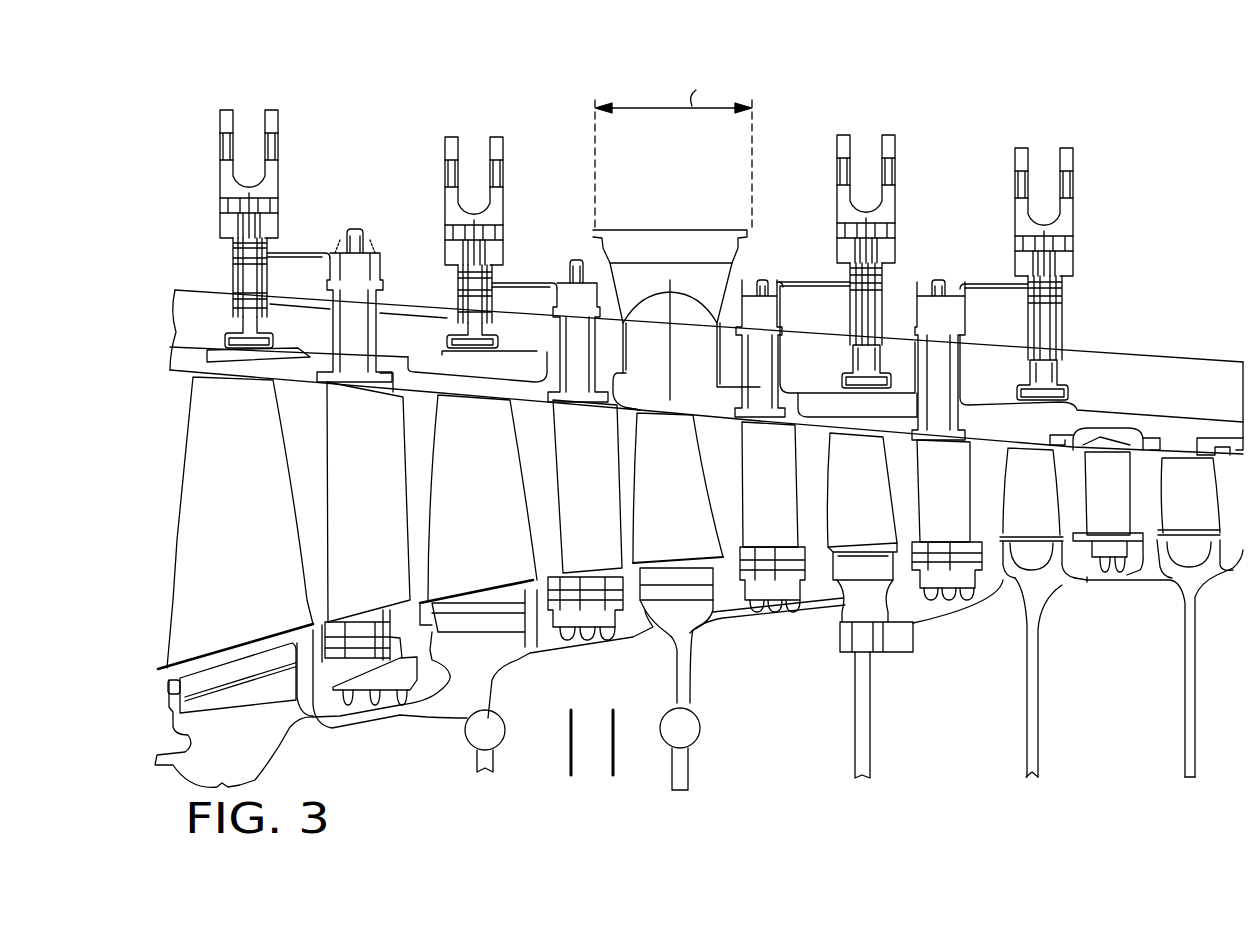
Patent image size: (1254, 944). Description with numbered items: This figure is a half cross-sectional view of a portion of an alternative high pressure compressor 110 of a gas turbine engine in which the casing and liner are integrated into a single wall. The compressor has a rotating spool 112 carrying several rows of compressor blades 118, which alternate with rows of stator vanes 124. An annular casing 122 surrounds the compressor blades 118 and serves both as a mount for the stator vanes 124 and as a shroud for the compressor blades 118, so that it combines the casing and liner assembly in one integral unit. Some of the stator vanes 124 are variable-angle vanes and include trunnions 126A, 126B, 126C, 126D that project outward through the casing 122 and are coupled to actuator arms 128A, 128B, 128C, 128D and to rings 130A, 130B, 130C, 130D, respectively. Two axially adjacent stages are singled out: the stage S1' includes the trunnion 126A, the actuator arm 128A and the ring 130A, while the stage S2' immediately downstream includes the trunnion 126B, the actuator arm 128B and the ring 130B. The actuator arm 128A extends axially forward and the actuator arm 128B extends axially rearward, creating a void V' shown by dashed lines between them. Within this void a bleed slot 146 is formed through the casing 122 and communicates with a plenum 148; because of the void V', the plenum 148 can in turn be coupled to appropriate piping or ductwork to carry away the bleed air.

The compressor 110 is at (1024, 85).
The spool 112 is at (433, 716).
The compressor blades 118 is at (695, 545).
The annular casing 122 is at (706, 371).
The stator vanes 124 is at (732, 543).
The trunnion 126A is at (358, 231).
The trunnion 126B is at (583, 262).
The trunnion 126C is at (745, 281).
The trunnion 126D is at (933, 281).
The actuator arm 128A is at (304, 253).
The actuator arm 128B is at (512, 283).
The actuator arm 128C is at (827, 280).
The actuator arm 128D is at (996, 284).
The ring 130A is at (279, 124).
The ring 130B is at (503, 149).
The ring 130C is at (896, 148).
The ring 130D is at (1076, 160).
The bleed slot 146 is at (641, 411).
The plenum 148 is at (676, 320).